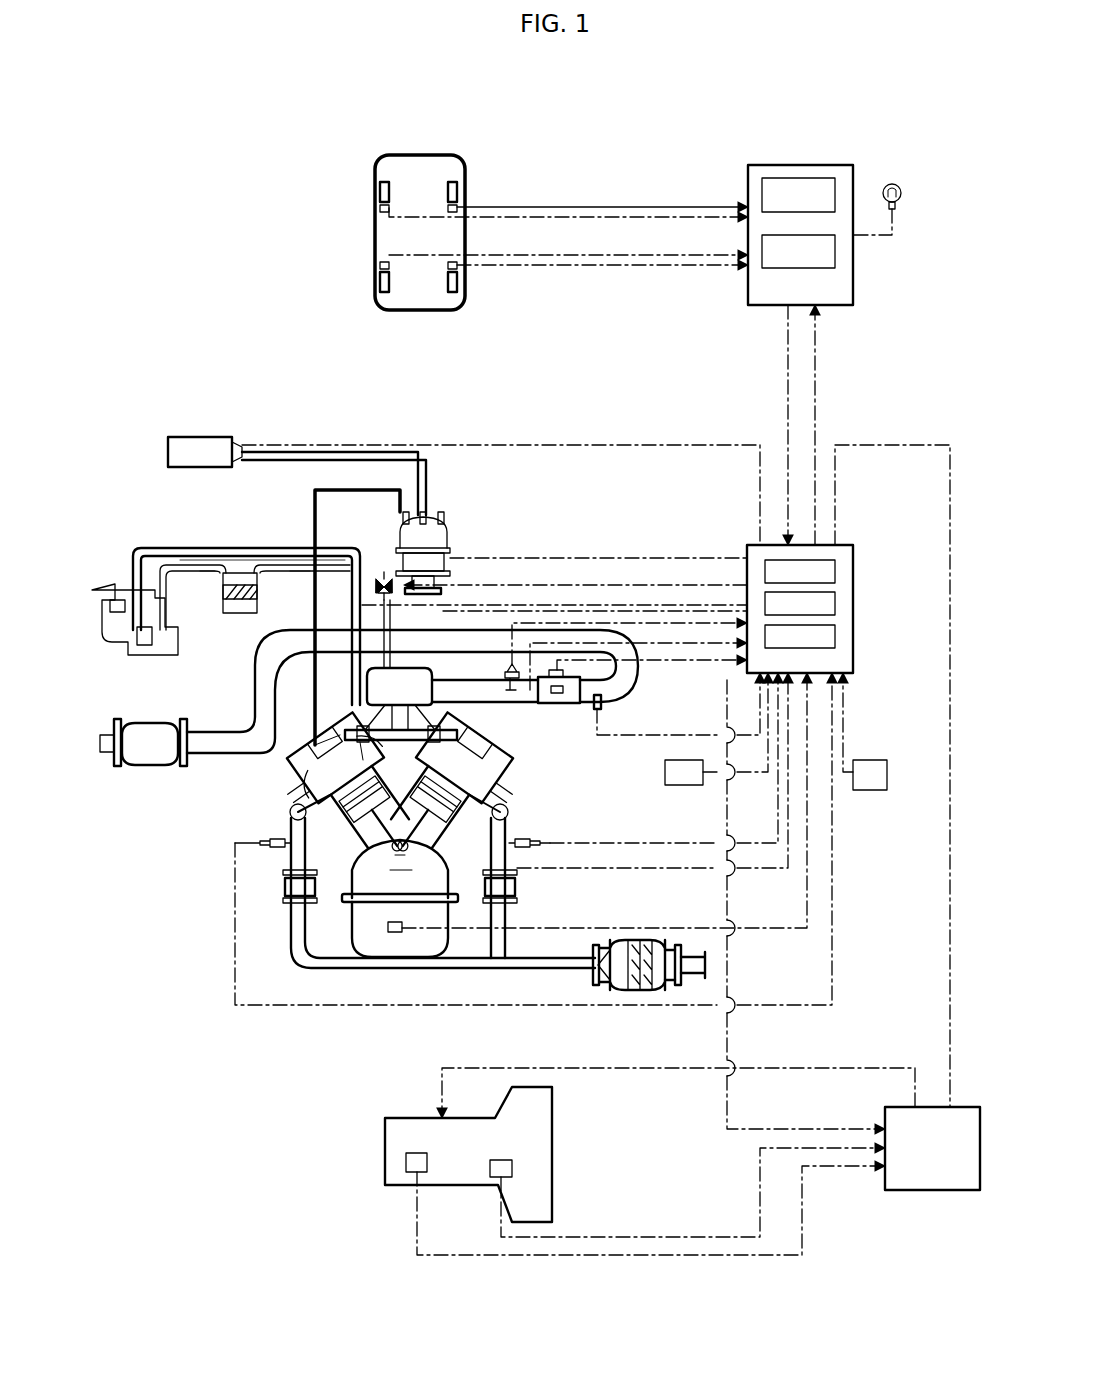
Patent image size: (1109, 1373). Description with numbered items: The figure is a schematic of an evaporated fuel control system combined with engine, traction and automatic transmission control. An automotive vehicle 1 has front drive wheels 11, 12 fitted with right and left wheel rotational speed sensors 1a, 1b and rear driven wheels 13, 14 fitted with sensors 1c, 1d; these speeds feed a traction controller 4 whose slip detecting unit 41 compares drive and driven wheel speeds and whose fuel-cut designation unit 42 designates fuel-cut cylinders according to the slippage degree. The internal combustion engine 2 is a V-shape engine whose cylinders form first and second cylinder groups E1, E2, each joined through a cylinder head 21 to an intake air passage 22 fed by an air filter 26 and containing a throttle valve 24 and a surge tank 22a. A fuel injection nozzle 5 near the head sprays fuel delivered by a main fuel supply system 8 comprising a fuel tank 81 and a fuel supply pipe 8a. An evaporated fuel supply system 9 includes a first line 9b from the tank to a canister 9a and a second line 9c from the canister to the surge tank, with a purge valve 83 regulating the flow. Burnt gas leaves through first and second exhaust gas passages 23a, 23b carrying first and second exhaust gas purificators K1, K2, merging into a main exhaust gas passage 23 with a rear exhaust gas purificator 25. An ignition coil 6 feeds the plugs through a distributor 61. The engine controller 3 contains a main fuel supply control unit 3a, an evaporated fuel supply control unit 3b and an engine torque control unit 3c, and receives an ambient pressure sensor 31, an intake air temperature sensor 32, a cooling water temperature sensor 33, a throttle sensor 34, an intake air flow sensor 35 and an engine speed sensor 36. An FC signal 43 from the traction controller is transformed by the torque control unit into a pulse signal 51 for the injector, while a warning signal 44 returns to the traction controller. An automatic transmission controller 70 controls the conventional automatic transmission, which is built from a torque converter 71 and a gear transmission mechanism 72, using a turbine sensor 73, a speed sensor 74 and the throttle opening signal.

The automotive vehicle 1 is at (424, 352).
The right wheel rotational speed sensor 1a is at (457, 208).
The left wheel rotational speed sensor 1b is at (380, 208).
The right rotational speed sensor 1c is at (457, 266).
The left rotational speed sensor 1d is at (380, 265).
The front wheel 11 is at (457, 182).
The front wheel 12 is at (388, 182).
The rear wheel 13 is at (458, 292).
The rear wheel 14 is at (380, 292).
The internal combustion engine 2 is at (275, 800).
The cylinder head 21 is at (312, 760).
The intake air passage 22 is at (258, 738).
The surge tank 22a is at (412, 668).
The main exhaust gas passage 23 is at (522, 962).
The first exhaust gas passage 23a is at (292, 940).
The second exhaust gas passage 23b is at (508, 918).
The throttle valve 24 is at (515, 693).
The rear exhaust gas purificator 25 is at (637, 990).
The air filter 26 is at (147, 735).
The engine controller 3 is at (853, 600).
The main fuel supply control unit 3a is at (800, 572).
The evaporated fuel supply control unit 3b is at (828, 606).
The engine torque control unit 3c is at (828, 638).
The ambient pressure sensor 31 is at (684, 785).
The intake air temperature sensor 32 is at (602, 705).
The cooling water temperature sensor 33 is at (868, 790).
The throttle sensor 34 is at (512, 662).
The intake air flow sensor 35 is at (563, 703).
The engine speed sensor 36 is at (395, 933).
The traction controller 4 is at (803, 165).
The slip detecting unit 41 is at (778, 190).
The fuel-cut designation unit 42 is at (782, 262).
The FC signal 43 is at (786, 395).
The warning signal 44 is at (817, 400).
The fuel injection nozzle 5 is at (362, 728).
The pulse signal 51 is at (487, 575).
The ignition coil 6 is at (204, 437).
The distributor 61 is at (442, 535).
The automatic transmission controller 70 is at (925, 1183).
The torque converter 71 is at (553, 1135).
The gear transmission mechanism 72 is at (390, 1185).
The turbine sensor 73 is at (490, 1170).
The speed sensor 74 is at (406, 1160).
The main fuel supply system 8 is at (178, 545).
The fuel supply pipe 8a is at (242, 557).
The fuel tank 81 is at (118, 655).
The purge valve 83 is at (381, 575).
The evaporated fuel supply system 9 is at (200, 560).
The canister 9a is at (240, 613).
The first line 9b is at (204, 572).
The second line 9c is at (297, 572).
The first cylinder group E1 is at (290, 808).
The second cylinder group E2 is at (508, 812).